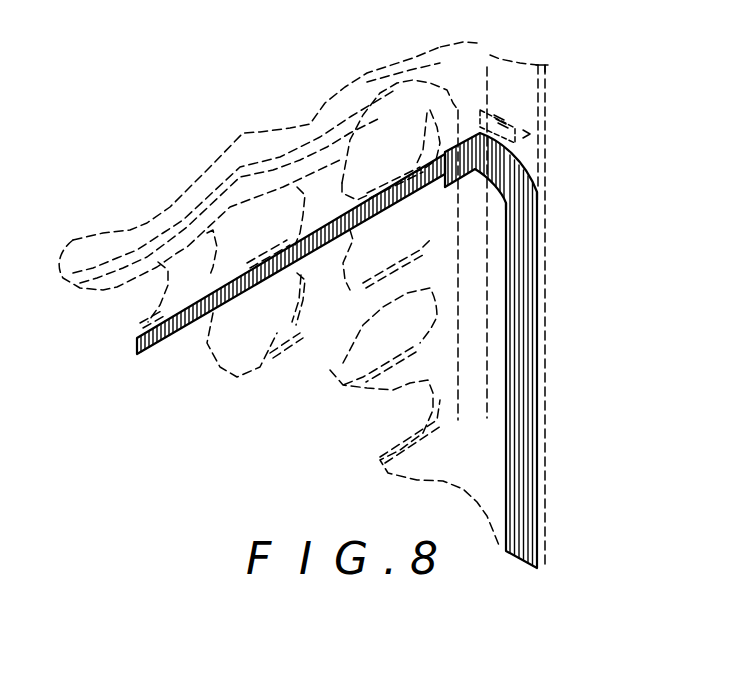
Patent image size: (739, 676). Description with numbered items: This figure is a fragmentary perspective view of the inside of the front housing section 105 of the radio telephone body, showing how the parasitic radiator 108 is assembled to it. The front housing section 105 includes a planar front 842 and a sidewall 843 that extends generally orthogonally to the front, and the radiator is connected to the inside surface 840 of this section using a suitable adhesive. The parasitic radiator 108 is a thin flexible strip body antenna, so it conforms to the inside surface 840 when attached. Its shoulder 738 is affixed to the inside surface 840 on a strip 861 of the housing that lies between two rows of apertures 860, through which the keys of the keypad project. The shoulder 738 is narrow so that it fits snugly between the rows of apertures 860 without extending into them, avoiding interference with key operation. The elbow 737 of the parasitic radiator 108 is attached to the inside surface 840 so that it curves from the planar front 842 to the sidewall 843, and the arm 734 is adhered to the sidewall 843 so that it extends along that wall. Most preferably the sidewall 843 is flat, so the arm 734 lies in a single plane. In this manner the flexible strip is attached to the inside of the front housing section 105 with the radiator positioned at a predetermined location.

The front housing section 105 is at (488, 53).
The parasitic radiator 108 is at (557, 67).
The arm 734 is at (520, 320).
The elbow 737 is at (507, 183).
The shoulder 738 is at (185, 327).
The inside surface 840 is at (363, 522).
The planar front 842 is at (240, 153).
The sidewall 843 is at (530, 152).
The apertures 860 is at (262, 215).
The strip 861 is at (183, 257).